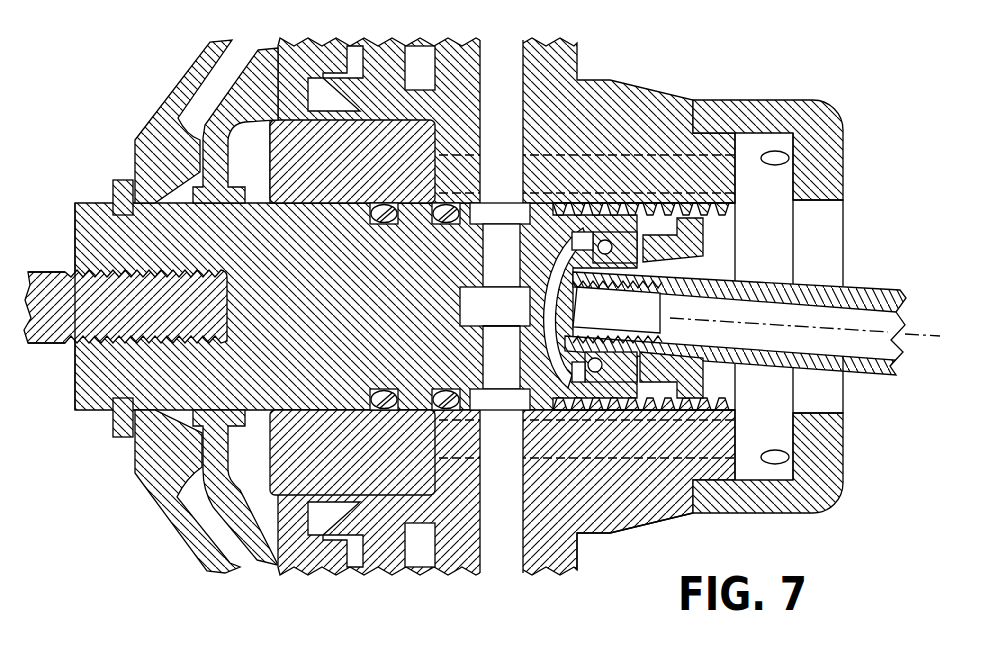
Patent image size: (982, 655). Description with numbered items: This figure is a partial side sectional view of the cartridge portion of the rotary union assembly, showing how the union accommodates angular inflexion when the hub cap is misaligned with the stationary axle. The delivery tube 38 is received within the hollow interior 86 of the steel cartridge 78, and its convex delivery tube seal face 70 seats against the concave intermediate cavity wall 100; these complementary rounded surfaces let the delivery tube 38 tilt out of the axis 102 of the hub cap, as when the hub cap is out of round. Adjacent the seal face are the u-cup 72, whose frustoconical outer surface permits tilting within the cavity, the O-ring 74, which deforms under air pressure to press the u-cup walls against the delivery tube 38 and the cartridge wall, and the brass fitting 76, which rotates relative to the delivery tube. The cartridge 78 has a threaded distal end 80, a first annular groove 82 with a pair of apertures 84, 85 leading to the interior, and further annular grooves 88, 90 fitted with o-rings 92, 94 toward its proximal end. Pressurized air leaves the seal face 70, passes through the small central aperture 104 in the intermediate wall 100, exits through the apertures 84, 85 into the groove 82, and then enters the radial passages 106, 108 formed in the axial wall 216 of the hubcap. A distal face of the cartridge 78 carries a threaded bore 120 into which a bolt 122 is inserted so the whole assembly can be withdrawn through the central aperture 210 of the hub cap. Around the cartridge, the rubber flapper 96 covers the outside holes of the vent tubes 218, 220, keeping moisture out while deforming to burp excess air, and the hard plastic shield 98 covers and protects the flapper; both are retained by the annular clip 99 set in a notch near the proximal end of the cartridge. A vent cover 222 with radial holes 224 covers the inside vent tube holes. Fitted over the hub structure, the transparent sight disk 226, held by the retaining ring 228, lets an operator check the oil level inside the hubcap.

The delivery tube 38 is at (862, 288).
The delivery tube seal face 70 is at (560, 400).
The u-cup 72 is at (640, 400).
The O-ring 74 is at (580, 230).
The brass fitting 76 is at (703, 238).
The cartridge 78 is at (92, 422).
The threaded distal end 80 is at (655, 205).
The first annular groove 82 is at (543, 205).
The aperture 84 is at (490, 244).
The aperture 85 is at (493, 373).
The hollow interior 86 is at (462, 298).
The annular groove 88 is at (440, 420).
The annular groove 90 is at (380, 420).
The o-ring 92 is at (446, 200).
The o-ring 94 is at (383, 200).
The rubber flapper 96 is at (249, 50).
The hard plastic shield 98 is at (178, 70).
The annular clip 99 is at (118, 178).
The intermediate cavity wall 100 is at (522, 350).
The axis 102 is at (912, 340).
The small central aperture 104 is at (553, 308).
The radial passage 106 is at (490, 37).
The radial passage 108 is at (515, 574).
The threaded bore 120 is at (222, 275).
The bolt 122 is at (48, 268).
The central aperture 210 is at (288, 410).
The axial wall 216 is at (603, 533).
The vent tube 218 is at (322, 205).
The vent tube 220 is at (318, 410).
The vent cover 222 is at (795, 98).
The radial holes 224 is at (773, 450).
The sight disk 226 is at (411, 567).
The retaining ring 228 is at (352, 567).